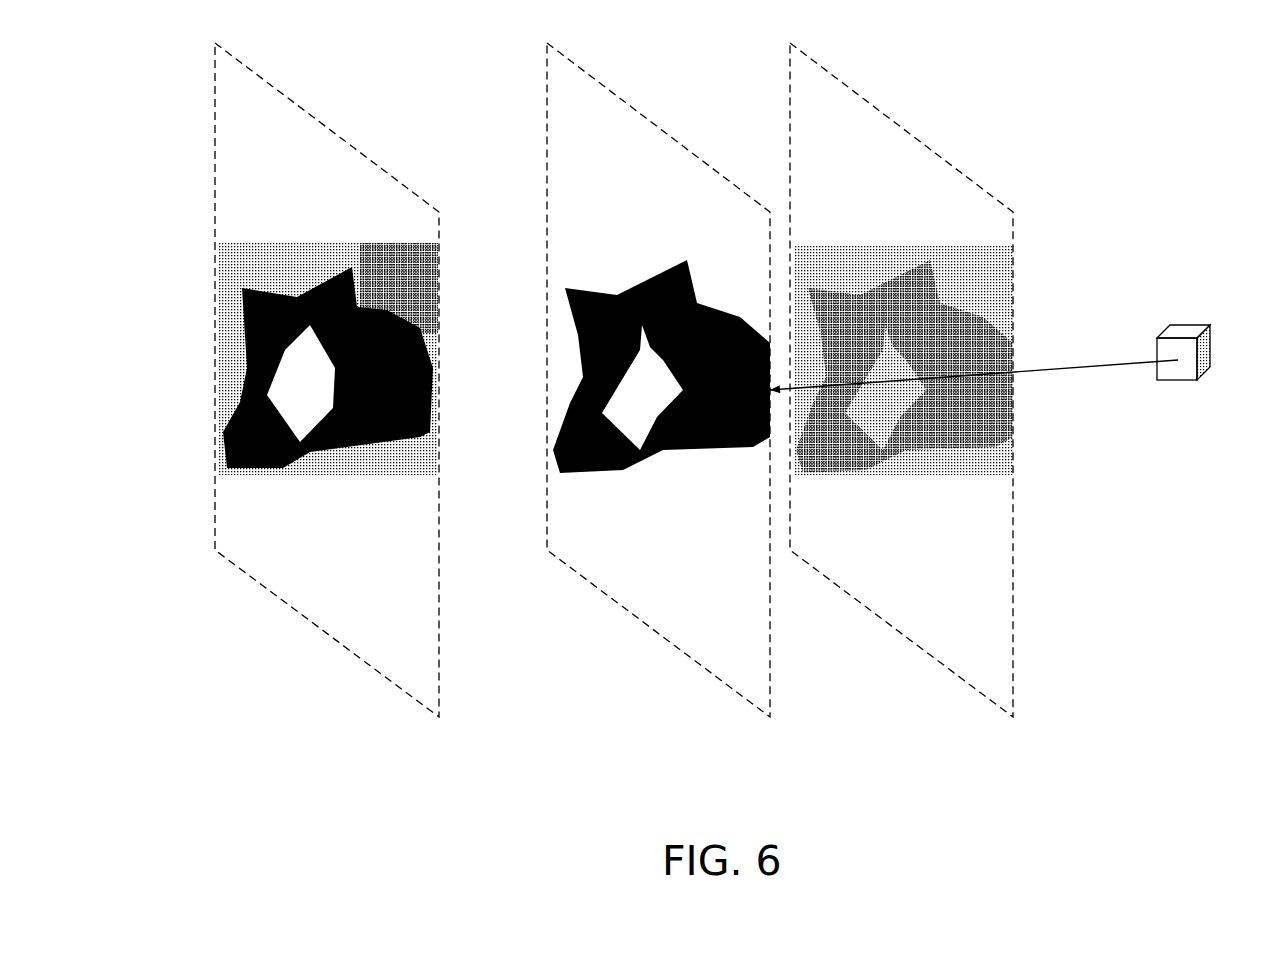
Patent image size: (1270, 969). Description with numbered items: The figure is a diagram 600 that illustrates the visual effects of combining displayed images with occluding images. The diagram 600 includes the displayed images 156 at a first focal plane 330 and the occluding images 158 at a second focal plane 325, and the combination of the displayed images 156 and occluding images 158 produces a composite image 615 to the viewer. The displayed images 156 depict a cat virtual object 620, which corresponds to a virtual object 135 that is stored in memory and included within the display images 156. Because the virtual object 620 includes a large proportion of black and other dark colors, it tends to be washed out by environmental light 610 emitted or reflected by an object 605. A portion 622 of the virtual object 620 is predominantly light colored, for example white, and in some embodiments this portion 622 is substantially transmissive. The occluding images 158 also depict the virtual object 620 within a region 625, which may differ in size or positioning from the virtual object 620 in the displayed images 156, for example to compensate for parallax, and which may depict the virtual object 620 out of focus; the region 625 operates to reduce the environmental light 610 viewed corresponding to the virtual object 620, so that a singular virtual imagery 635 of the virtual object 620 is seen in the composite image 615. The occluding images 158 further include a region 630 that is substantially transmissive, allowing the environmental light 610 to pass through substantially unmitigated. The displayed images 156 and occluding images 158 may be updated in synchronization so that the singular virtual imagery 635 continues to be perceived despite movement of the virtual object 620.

The diagram 600 is at (1097, 58).
The object 605 is at (1185, 332).
The environmental light 610 is at (1080, 368).
The composite image 615 is at (215, 110).
The virtual object 620 is at (952, 310).
The virtual object 135 is at (955, 348).
The portion 622 is at (898, 433).
The region 625 is at (598, 290).
The region 630 is at (596, 139).
The singular virtual imagery 635 is at (240, 293).
The second focal plane 325 is at (547, 75).
The first focal plane 330 is at (790, 75).
The displayed images 156 is at (989, 708).
The occluding images 158 is at (745, 706).